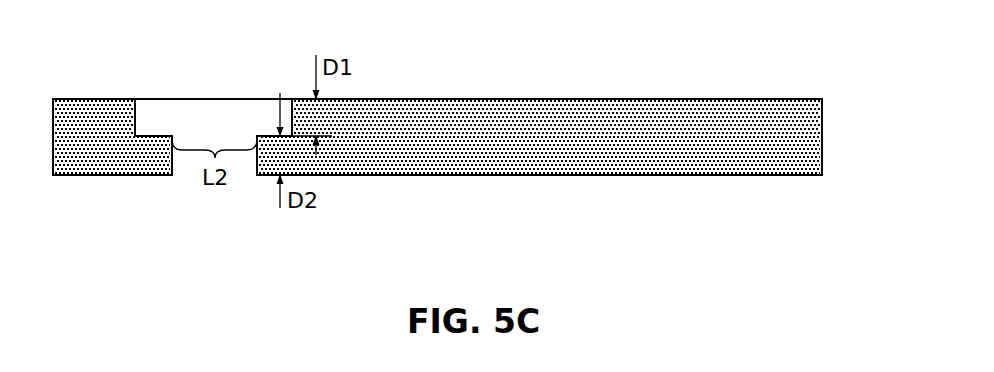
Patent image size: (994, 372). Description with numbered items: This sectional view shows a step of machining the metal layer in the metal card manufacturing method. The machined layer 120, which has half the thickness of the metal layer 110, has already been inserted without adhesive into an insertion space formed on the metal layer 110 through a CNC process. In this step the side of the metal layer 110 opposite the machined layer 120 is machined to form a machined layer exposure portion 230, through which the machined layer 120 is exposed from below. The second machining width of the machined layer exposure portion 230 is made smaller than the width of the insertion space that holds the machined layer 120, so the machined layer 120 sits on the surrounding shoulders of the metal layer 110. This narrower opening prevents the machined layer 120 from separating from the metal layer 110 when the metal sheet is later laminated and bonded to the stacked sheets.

The metal layer 110 is at (822, 137).
The machined layer 120 is at (222, 118).
The machined layer exposure portion 230 is at (183, 175).